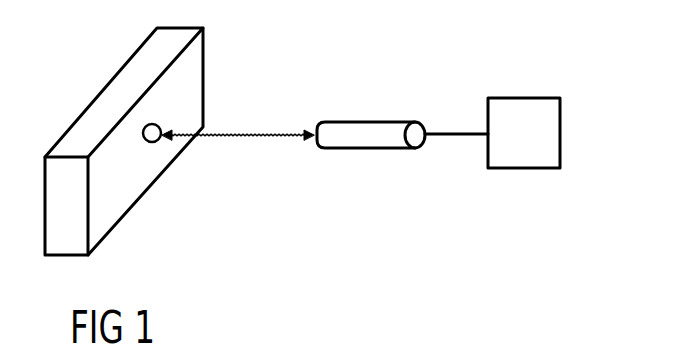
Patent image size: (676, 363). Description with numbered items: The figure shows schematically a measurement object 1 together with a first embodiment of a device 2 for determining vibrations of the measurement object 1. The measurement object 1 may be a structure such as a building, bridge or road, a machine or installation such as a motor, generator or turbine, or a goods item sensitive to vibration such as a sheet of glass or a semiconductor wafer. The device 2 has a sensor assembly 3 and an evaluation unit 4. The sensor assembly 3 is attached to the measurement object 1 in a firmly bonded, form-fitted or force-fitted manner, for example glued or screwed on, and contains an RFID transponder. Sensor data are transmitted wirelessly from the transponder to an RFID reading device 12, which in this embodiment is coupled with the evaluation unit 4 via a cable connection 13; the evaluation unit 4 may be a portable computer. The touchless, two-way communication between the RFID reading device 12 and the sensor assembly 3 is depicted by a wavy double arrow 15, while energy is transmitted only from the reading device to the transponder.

The measurement object 1 is at (85, 135).
The device 2 is at (140, 175).
The sensor assembly 3 is at (150, 121).
The evaluation unit 4 is at (532, 110).
The RFID reading device 12 is at (365, 130).
The cable connection 13 is at (447, 130).
The wavy double arrow 15 is at (257, 130).